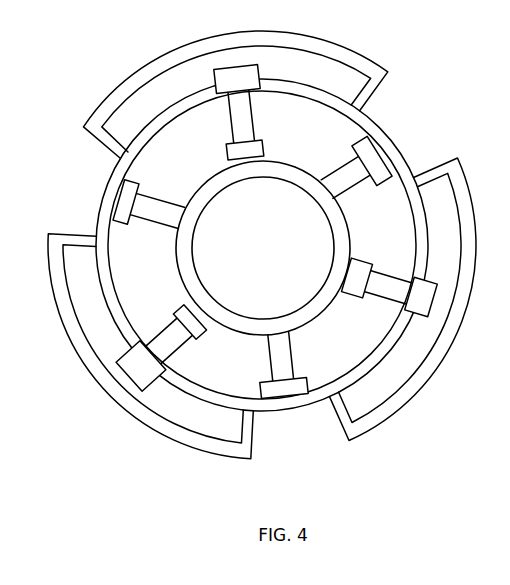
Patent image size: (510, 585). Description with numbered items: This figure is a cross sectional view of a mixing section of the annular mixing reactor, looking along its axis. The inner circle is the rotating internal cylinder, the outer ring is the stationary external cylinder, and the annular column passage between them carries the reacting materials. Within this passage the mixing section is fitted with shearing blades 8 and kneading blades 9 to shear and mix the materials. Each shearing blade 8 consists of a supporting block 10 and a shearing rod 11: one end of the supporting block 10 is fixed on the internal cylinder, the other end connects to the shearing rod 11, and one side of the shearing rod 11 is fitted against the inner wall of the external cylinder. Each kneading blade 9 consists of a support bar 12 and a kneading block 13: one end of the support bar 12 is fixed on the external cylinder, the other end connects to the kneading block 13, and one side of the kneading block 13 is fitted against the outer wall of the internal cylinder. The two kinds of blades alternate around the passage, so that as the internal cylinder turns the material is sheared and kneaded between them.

The shearing blade 8 is at (354, 158).
The kneading blade 9 is at (382, 264).
The supporting block 10 is at (162, 214).
The shearing rod 11 is at (132, 198).
The support bar 12 is at (170, 340).
The kneading block 13 is at (200, 326).